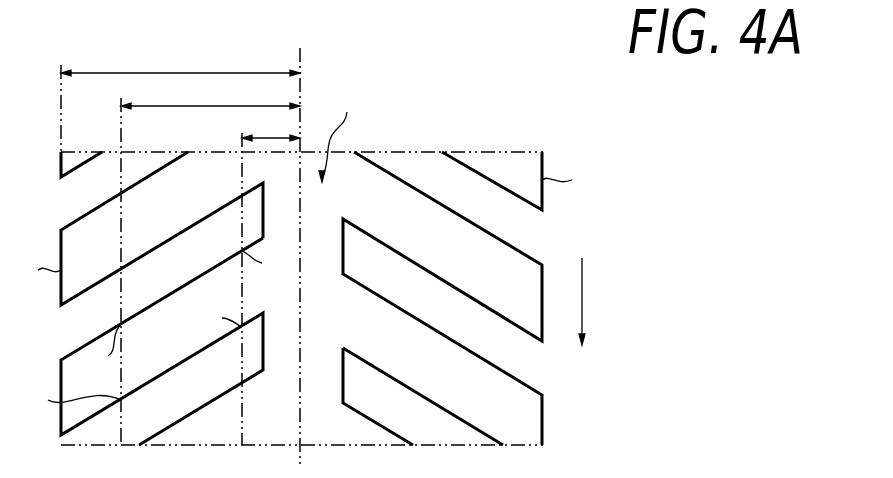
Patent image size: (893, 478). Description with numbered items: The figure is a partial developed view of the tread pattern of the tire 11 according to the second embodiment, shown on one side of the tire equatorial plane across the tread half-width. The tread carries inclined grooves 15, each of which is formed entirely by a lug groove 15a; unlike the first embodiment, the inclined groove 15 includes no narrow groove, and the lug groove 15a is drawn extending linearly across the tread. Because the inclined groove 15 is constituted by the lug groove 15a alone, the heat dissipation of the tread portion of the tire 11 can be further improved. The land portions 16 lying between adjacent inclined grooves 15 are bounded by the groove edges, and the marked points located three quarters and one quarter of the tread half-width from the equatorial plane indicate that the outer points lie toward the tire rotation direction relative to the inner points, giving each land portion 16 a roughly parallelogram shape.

The tire 11 is at (529, 114).
The inclined groove 15 is at (168, 262).
The lug groove 15a is at (462, 193).
The groove 16 is at (176, 348).